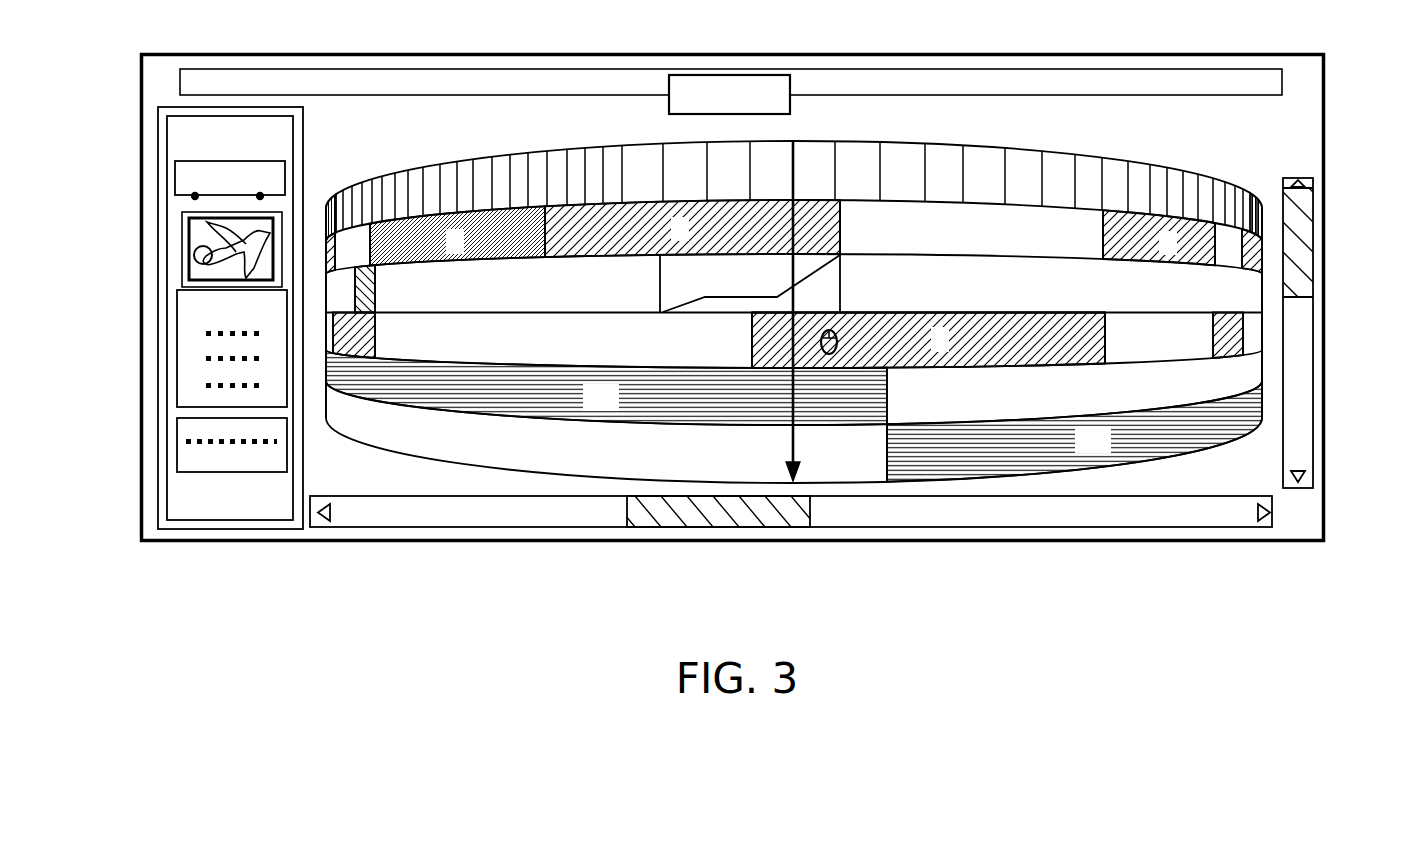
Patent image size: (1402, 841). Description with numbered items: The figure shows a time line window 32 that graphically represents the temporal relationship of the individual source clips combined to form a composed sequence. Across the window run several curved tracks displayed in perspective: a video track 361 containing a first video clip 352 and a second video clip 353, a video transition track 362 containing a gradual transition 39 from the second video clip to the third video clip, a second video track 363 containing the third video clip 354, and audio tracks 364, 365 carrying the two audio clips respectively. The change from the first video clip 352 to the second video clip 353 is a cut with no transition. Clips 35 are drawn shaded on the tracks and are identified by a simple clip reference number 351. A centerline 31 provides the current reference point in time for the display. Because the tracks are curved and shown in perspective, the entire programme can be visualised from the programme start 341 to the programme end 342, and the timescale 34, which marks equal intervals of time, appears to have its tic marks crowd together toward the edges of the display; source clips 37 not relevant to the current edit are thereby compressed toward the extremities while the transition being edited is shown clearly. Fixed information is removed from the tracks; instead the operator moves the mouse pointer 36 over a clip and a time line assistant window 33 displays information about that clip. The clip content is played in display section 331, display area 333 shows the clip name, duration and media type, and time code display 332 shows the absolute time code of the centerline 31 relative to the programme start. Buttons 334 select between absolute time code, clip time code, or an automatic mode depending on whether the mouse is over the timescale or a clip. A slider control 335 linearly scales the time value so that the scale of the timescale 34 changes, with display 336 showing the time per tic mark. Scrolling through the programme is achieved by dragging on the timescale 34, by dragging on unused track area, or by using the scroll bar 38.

The centerline 31 is at (790, 450).
The time line window 32 is at (1310, 112).
The time line assistant window 33 is at (258, 518).
The display section 331 is at (180, 253).
The time code display 332 is at (178, 163).
The display area 333 is at (185, 382).
The buttons 334 is at (193, 197).
The slider control 335 is at (185, 452).
The display 336 is at (177, 492).
The timescale 34 is at (1065, 167).
The programme start 341 is at (326, 208).
The programme end 342 is at (1262, 208).
The clips 35 is at (1032, 419).
The clip reference number 351 is at (943, 360).
The video clip 1 352 is at (530, 248).
The video clip 2 353 is at (622, 237).
The video clip 3 354 is at (905, 327).
The mouse pointer 36 is at (829, 355).
The source clips 37 is at (375, 328).
The scroll bar 38 is at (663, 520).
The gradual transition 39 is at (727, 305).
The video track 361 is at (1267, 262).
The video transition track 362 is at (1267, 292).
The video track 363 is at (1267, 332).
The audio track 364 is at (1267, 367).
The audio track 365 is at (1267, 400).